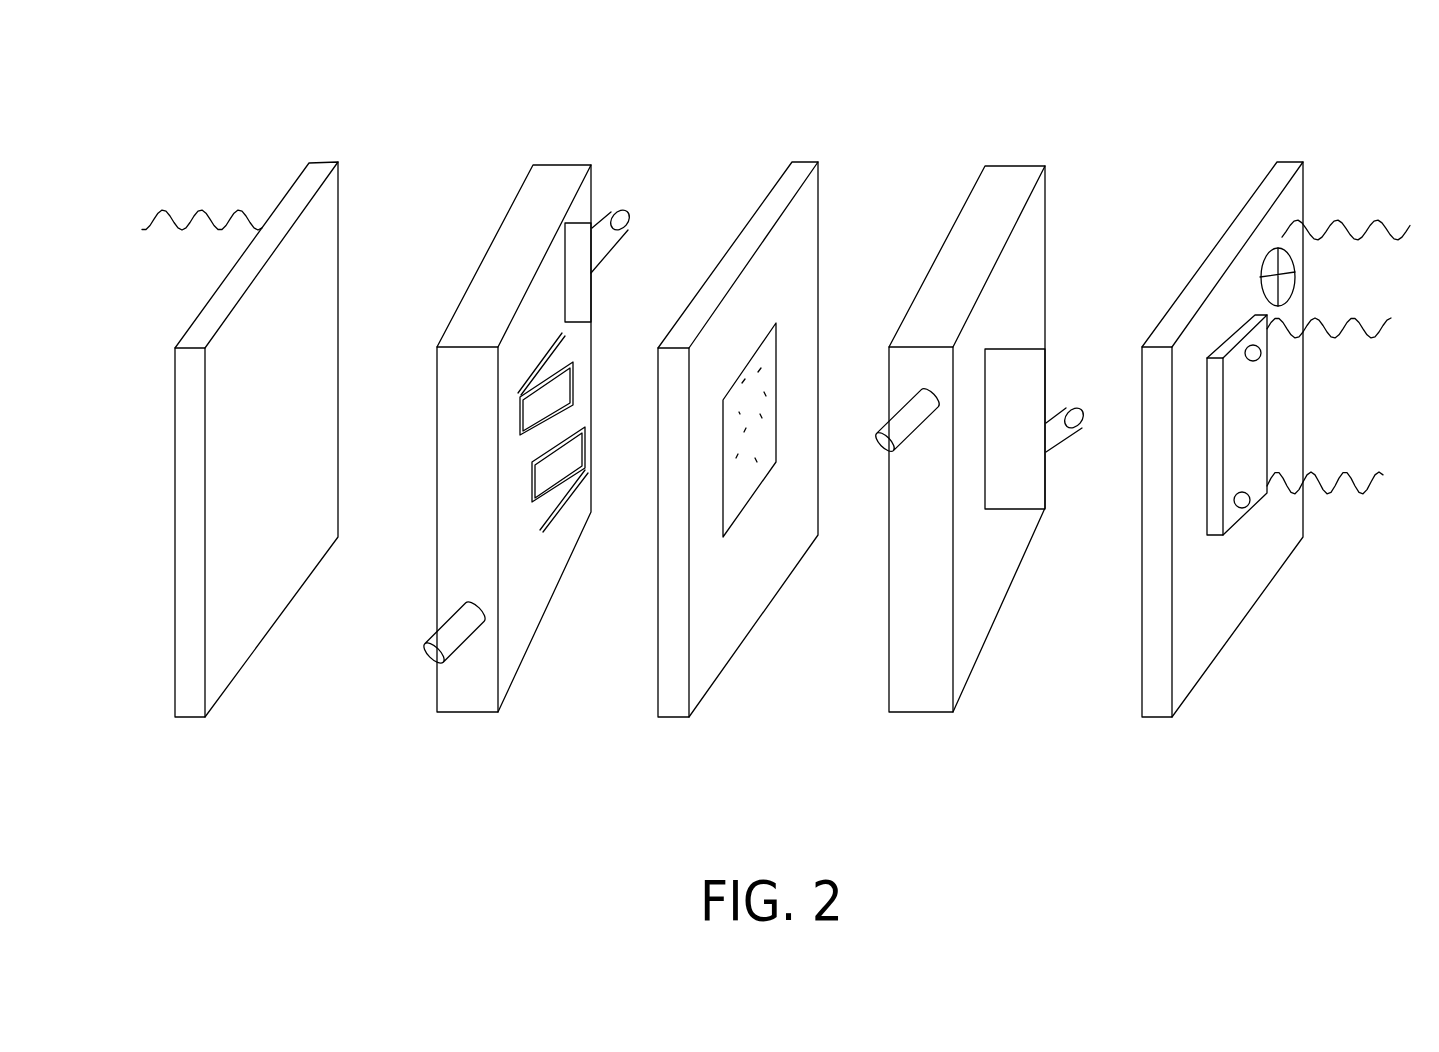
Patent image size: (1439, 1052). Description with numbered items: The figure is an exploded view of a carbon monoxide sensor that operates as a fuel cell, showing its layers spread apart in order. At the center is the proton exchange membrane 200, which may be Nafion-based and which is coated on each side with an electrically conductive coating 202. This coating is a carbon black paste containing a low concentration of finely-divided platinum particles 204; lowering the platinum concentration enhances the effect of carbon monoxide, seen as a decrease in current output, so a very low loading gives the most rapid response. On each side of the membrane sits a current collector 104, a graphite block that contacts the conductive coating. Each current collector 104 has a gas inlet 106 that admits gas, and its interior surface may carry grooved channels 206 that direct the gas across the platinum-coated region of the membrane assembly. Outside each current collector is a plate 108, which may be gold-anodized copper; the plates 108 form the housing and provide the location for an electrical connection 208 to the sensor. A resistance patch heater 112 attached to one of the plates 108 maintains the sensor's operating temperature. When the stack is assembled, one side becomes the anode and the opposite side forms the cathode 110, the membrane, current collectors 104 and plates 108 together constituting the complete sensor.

The current collector 104 is at (522, 233).
The gas inlet 106 is at (622, 220).
The plate 108 is at (260, 607).
The cathode 110 is at (1273, 273).
The resistance patch heater 112 is at (1235, 388).
The proton exchange membrane 200 is at (807, 205).
The electrically conductive coating 202 is at (740, 487).
The platinum particles 204 is at (757, 390).
The grooved channels 206 is at (567, 498).
The electrical connection 208 is at (187, 207).